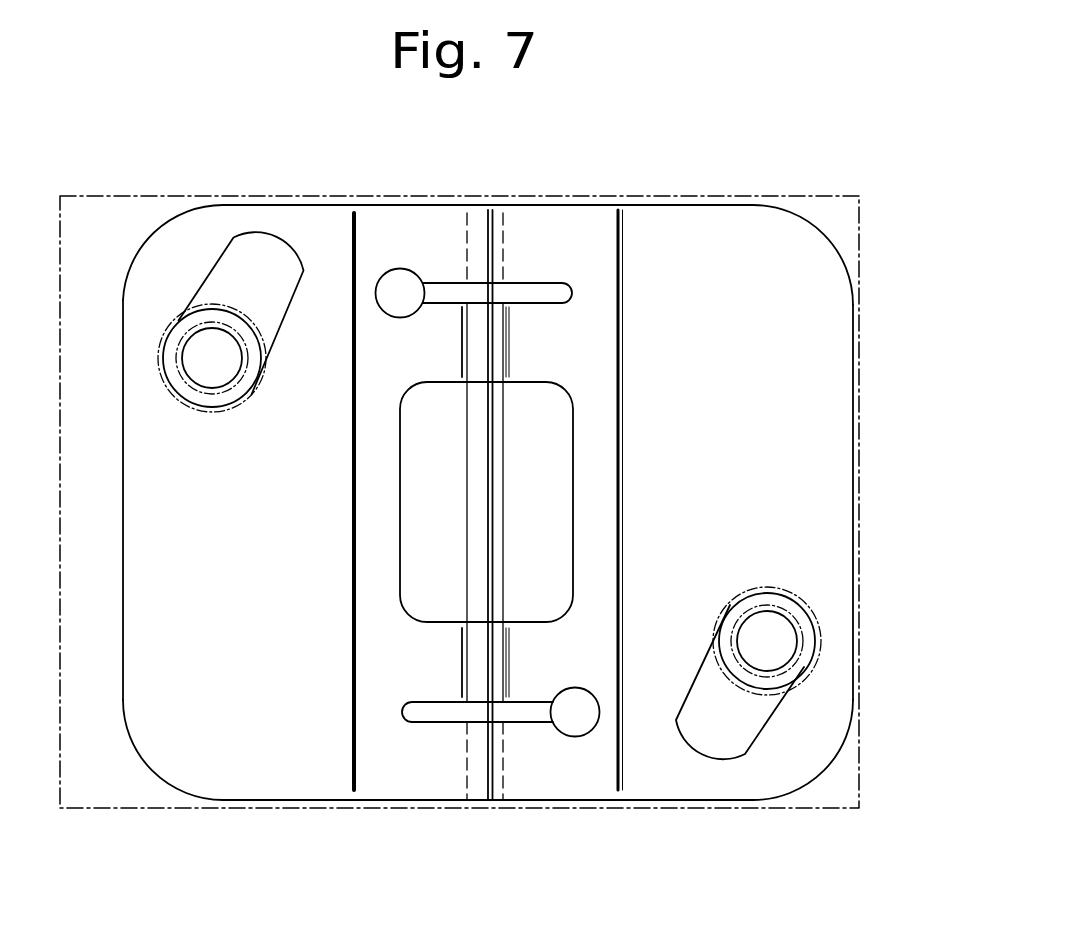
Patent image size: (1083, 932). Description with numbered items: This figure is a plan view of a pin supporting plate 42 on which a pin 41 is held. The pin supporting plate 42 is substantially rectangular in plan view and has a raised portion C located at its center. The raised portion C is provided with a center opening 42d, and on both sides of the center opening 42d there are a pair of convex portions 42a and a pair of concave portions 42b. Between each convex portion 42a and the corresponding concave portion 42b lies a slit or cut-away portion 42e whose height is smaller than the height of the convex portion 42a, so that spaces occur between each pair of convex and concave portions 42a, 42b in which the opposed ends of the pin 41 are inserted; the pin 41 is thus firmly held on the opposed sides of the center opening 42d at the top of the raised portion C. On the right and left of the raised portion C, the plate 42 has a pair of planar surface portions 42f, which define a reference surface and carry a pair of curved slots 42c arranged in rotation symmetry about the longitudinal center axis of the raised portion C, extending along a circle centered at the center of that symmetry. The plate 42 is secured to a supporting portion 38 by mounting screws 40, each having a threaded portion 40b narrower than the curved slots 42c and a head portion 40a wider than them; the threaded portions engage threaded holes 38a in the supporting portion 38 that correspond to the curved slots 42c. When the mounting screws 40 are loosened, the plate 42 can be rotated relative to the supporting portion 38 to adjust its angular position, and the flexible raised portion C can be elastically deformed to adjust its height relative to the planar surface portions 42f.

The supporting portion 38 is at (835, 217).
The threaded hole 38a is at (197, 372).
The mounting screw 40 is at (163, 344).
The head portion 40a is at (218, 410).
The threaded portion 40b is at (227, 368).
The pin 41 is at (500, 506).
The pin supporting plate 42 is at (723, 231).
The convex portion 42a is at (450, 222).
The concave portion 42b is at (557, 335).
The curved slot 42c is at (243, 242).
The center opening 42d is at (557, 430).
The slit 42e is at (522, 293).
The planar surface portion 42f is at (134, 509).
The raised portion C is at (389, 223).